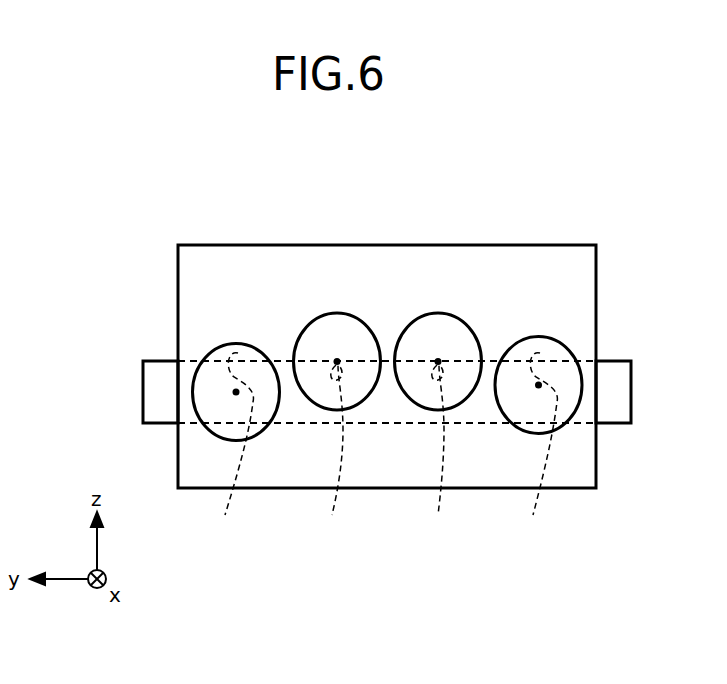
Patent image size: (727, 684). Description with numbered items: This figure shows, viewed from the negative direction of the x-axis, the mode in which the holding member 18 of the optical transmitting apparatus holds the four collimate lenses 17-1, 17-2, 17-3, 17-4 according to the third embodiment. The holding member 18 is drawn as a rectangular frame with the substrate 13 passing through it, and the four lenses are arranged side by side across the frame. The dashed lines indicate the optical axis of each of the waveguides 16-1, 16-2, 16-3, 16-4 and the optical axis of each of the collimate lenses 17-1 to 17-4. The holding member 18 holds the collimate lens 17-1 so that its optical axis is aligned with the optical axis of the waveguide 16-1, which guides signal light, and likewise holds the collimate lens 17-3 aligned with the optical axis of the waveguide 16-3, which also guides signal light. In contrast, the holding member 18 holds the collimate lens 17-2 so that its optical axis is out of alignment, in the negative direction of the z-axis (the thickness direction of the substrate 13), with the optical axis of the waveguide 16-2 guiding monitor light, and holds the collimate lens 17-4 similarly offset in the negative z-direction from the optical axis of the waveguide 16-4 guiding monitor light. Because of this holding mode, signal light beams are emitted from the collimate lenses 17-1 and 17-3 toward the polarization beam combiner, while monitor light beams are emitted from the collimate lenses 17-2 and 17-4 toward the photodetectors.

The substrate 13 is at (158, 361).
The holding member 18 is at (282, 245).
The collimate lens 17-1 is at (337, 313).
The collimate lens 17-2 is at (237, 343).
The collimate lens 17-3 is at (438, 313).
The collimate lens 17-4 is at (538, 337).
The waveguide 16-1 is at (334, 454).
The waveguide 16-2 is at (229, 448).
The waveguide 16-3 is at (440, 454).
The waveguide 16-4 is at (535, 448).